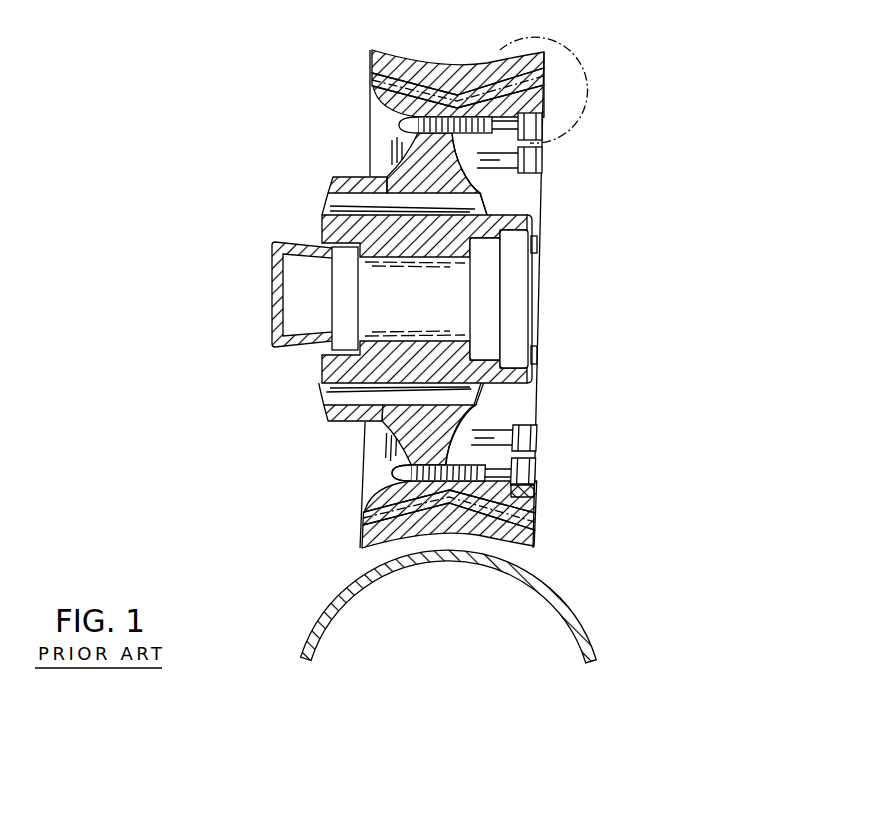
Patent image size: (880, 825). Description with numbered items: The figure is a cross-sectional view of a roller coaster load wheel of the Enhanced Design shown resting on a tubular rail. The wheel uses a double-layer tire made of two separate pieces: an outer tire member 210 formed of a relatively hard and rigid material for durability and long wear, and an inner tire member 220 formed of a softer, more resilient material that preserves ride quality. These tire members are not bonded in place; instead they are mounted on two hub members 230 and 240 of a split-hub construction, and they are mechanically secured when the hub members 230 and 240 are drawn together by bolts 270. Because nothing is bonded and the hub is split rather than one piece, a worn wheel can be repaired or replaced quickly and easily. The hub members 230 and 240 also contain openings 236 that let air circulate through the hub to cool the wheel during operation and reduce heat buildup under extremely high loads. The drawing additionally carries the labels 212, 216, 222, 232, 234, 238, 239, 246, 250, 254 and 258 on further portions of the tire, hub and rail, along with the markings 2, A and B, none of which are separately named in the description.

The outer tire member 210 is at (360, 58).
The rim 212 is at (538, 542).
The rim flange 216 is at (440, 62).
The inner tire member 220 is at (358, 65).
The wheel disc 222 is at (537, 527).
The hub member 230 is at (552, 233).
The bearing 232 is at (460, 242).
The spindle bore 234 is at (450, 298).
The openings 236 is at (477, 200).
The hub flange 238 is at (337, 174).
The hub body wall 239 is at (413, 107).
The hub member 240 is at (323, 214).
The bolt head 246 is at (407, 473).
The brake drum 250 is at (510, 110).
The mounting surface 254 is at (446, 505).
The bolt seat 258 is at (527, 488).
The bolts 270 is at (420, 127).
The section view line 2 is at (550, 90).
The inboard direction A is at (555, 337).
The outboard direction B is at (597, 640).